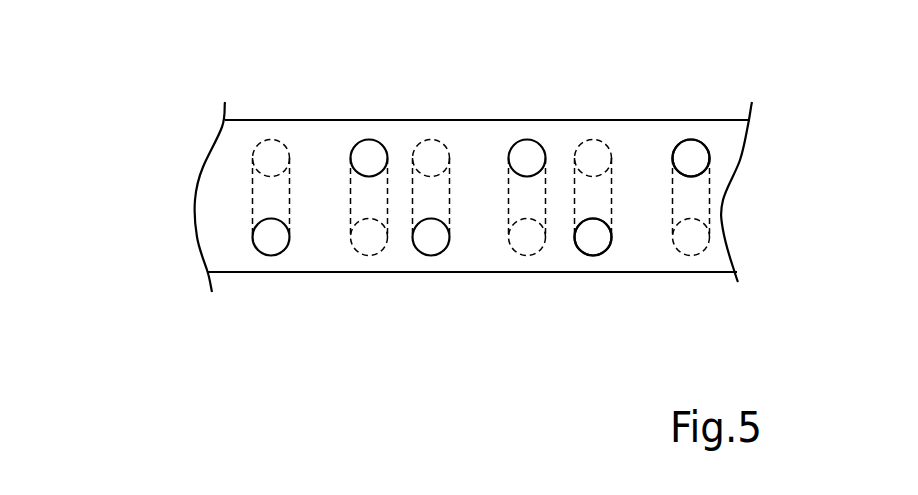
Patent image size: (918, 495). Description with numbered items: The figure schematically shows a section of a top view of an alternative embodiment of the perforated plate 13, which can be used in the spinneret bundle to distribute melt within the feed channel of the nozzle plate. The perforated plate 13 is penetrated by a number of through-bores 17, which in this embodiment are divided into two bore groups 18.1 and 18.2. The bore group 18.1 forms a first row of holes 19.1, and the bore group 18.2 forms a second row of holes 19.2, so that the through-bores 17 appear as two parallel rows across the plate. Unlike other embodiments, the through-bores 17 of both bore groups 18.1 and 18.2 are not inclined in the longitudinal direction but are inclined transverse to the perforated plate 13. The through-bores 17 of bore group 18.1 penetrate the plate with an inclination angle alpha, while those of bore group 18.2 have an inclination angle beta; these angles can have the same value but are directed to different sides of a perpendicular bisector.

The perforated plate 13 is at (718, 253).
The through-bore 17 is at (700, 158).
The bore group 18.1 is at (590, 240).
The bore group 18.2 is at (690, 170).
The first row of holes 19.1 is at (180, 248).
The second row of holes 19.2 is at (180, 150).